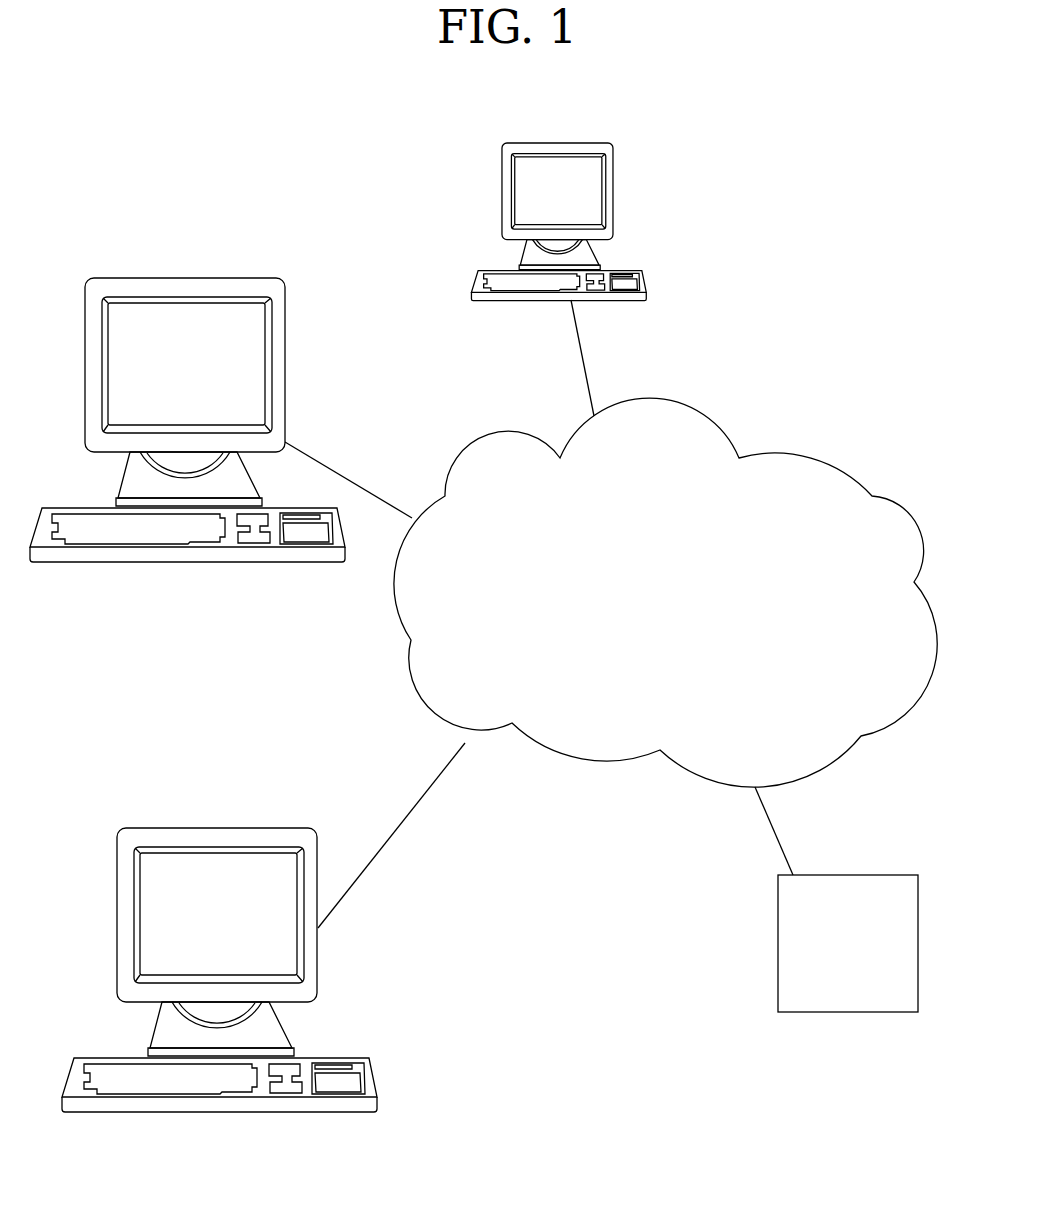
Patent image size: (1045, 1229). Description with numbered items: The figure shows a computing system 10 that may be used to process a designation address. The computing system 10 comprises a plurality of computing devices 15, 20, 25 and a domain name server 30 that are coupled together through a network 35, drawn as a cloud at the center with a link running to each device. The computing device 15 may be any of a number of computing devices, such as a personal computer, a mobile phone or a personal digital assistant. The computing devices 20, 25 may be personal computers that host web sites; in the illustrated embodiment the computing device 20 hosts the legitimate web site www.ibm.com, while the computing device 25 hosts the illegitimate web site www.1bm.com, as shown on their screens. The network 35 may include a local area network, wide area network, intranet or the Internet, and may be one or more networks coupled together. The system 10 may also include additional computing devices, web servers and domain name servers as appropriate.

The computing system 10 is at (194, 104).
The computing device 15 is at (573, 143).
The computing device 20 is at (158, 278).
The computing device 25 is at (186, 828).
The domain name server 30 is at (835, 956).
The network 35 is at (814, 454).